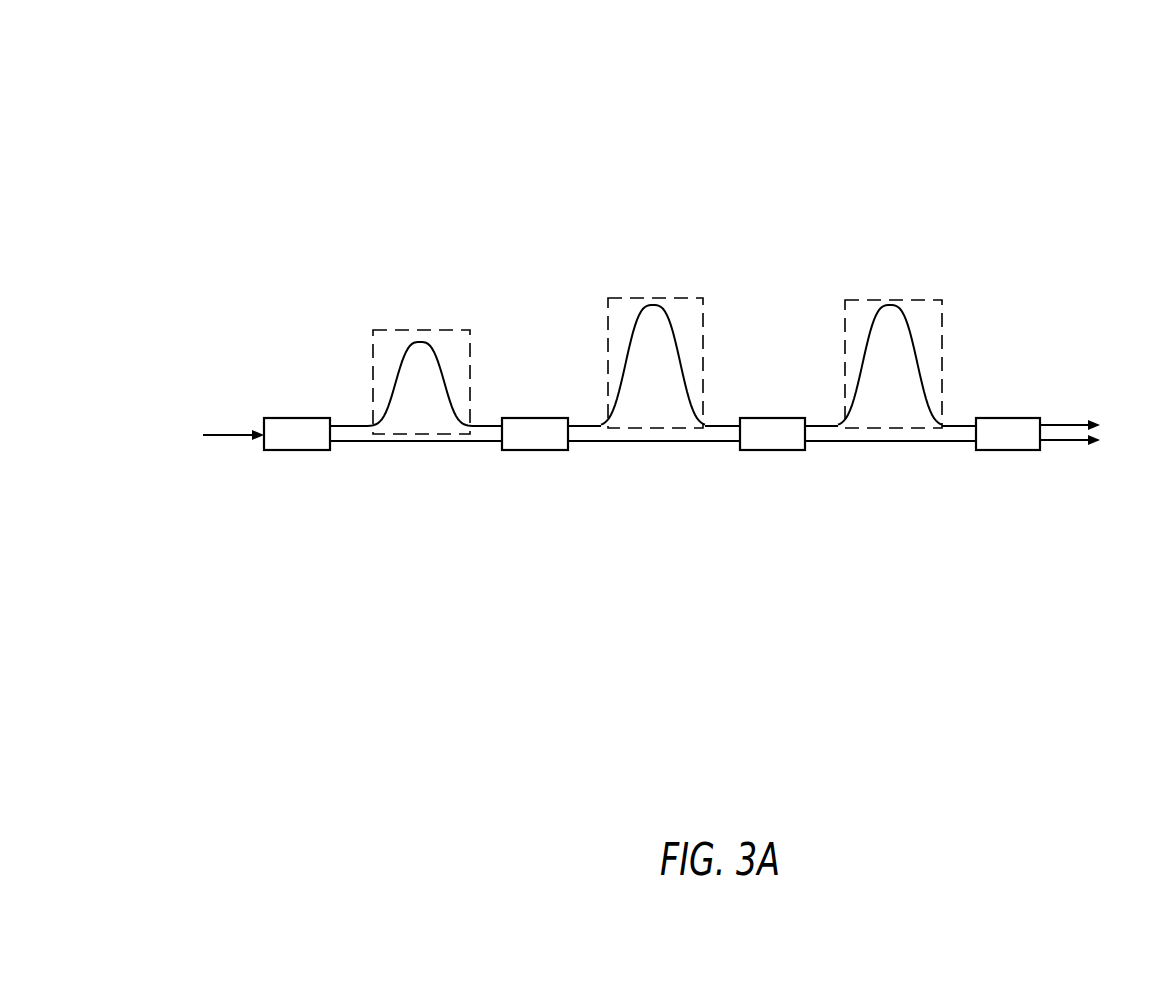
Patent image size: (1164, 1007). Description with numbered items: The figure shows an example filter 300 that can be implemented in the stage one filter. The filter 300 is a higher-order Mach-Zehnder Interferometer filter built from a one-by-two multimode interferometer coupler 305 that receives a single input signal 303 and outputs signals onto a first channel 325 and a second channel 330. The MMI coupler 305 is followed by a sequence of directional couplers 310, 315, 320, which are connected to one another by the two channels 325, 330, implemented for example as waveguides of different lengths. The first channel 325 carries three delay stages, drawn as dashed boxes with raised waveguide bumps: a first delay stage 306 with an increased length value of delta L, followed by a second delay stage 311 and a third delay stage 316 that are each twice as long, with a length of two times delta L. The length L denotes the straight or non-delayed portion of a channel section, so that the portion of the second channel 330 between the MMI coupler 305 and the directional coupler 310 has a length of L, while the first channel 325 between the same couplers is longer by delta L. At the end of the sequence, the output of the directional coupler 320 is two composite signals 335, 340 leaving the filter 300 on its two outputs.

The filter 300 is at (216, 90).
The input signal 303 is at (222, 436).
The 1x2 multimode interferometer (MMI) coupler 305 is at (281, 418).
The first delay stage 306 is at (372, 338).
The directional coupler 310 is at (548, 418).
The second delay stage 311 is at (607, 315).
The directional coupler 315 is at (783, 420).
The third delay stage 316 is at (846, 317).
The directional coupler 320 is at (1023, 418).
The first channel 325 is at (350, 427).
The second channel 330 is at (355, 446).
The composite signal 335 is at (1086, 423).
The composite signal 340 is at (1065, 444).